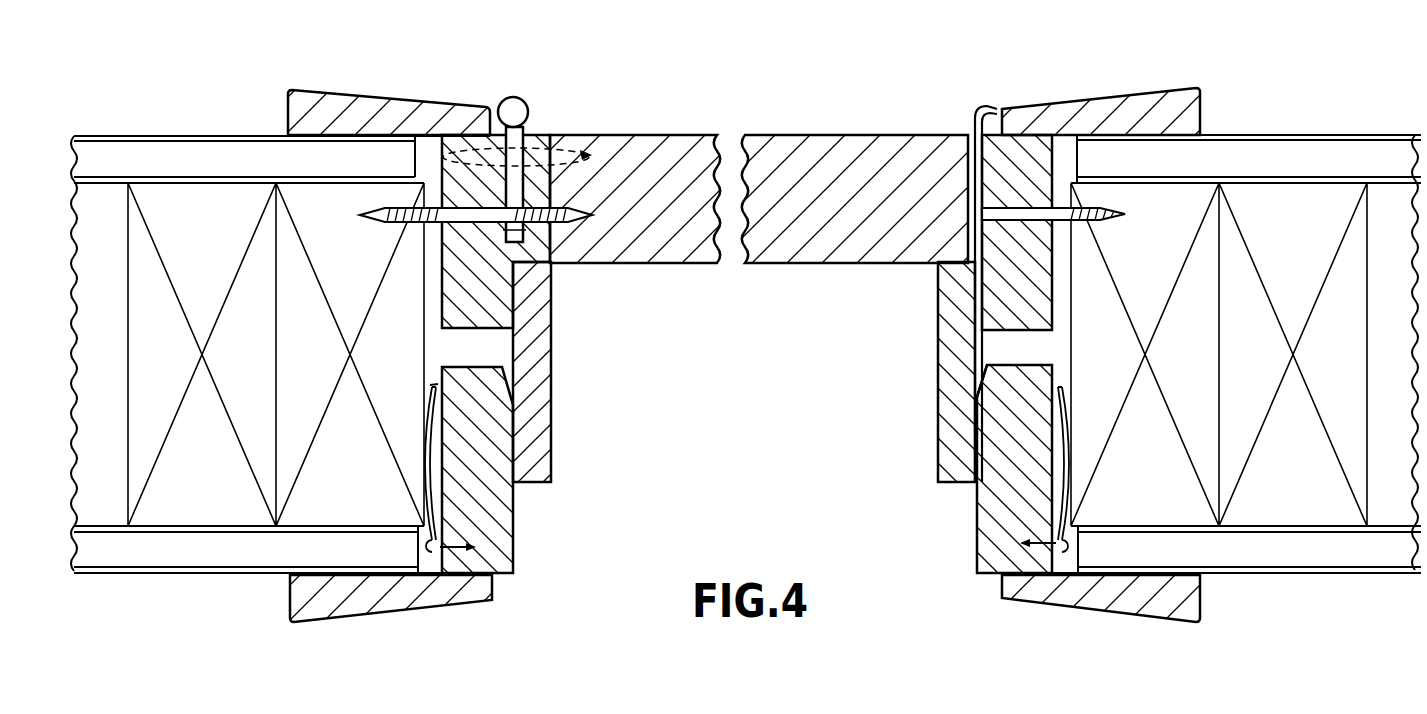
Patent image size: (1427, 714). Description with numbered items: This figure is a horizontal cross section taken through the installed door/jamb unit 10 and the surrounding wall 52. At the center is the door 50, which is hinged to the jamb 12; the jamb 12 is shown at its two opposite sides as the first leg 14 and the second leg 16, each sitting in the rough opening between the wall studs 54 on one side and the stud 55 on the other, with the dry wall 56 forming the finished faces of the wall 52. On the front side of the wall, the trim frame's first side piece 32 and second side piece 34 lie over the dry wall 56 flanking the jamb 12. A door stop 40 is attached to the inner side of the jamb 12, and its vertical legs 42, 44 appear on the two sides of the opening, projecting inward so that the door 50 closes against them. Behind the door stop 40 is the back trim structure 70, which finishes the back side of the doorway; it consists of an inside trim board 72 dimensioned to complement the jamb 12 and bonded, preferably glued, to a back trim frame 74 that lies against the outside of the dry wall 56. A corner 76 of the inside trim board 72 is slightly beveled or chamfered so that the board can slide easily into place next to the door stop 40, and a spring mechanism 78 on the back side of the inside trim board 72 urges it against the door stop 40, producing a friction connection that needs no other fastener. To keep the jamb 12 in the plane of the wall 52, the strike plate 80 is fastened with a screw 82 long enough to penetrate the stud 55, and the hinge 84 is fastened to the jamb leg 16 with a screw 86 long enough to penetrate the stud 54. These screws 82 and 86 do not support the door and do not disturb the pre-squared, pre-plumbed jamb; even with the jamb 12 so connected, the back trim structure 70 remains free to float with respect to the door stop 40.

The unit 10 is at (544, 119).
The jamb 12 is at (496, 316).
The first leg 14 is at (1010, 287).
The second leg 16 is at (507, 298).
The first side piece 32 is at (1118, 100).
The second side piece 34 is at (340, 110).
The door stop 40 is at (528, 428).
The vertical leg 42 is at (952, 416).
The vertical leg 44 is at (553, 392).
The door 50 is at (817, 143).
The wall 52 is at (100, 136).
The wall stud 54 is at (315, 200).
The stud 55 is at (1173, 203).
The dry wall 56 is at (191, 158).
The back trim structure 70 is at (498, 548).
The inside trim board 72 is at (1012, 522).
The back trim frame 74 is at (1090, 581).
The corner 76 is at (977, 388).
The spring mechanism 78 is at (423, 447).
The strike plate 80 is at (983, 125).
The screw 82 is at (1060, 180).
The hinge 84 is at (513, 97).
The screw 86 is at (437, 223).